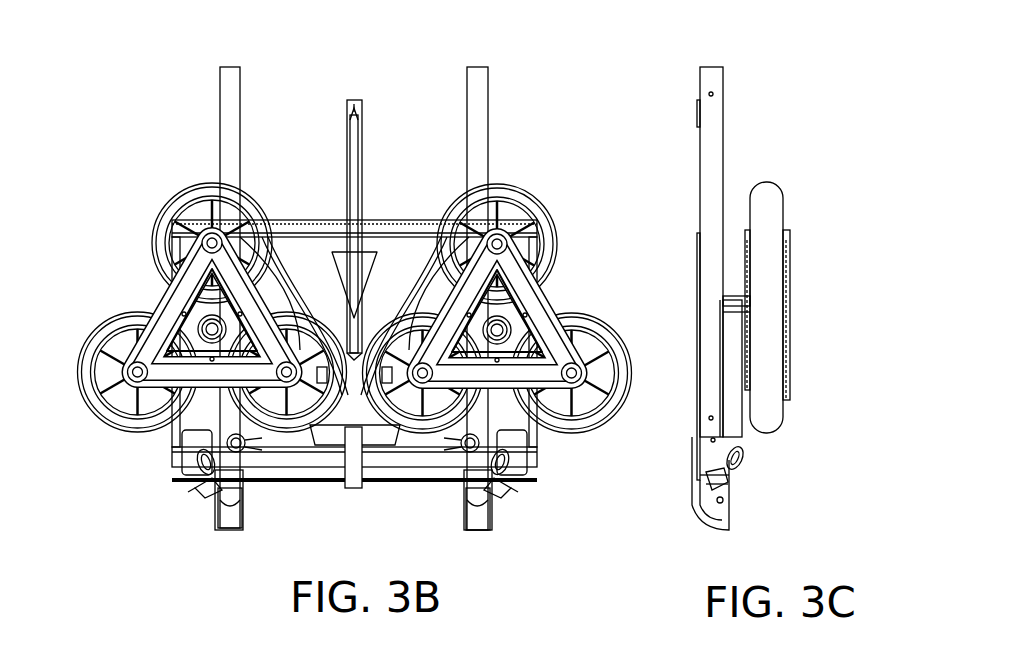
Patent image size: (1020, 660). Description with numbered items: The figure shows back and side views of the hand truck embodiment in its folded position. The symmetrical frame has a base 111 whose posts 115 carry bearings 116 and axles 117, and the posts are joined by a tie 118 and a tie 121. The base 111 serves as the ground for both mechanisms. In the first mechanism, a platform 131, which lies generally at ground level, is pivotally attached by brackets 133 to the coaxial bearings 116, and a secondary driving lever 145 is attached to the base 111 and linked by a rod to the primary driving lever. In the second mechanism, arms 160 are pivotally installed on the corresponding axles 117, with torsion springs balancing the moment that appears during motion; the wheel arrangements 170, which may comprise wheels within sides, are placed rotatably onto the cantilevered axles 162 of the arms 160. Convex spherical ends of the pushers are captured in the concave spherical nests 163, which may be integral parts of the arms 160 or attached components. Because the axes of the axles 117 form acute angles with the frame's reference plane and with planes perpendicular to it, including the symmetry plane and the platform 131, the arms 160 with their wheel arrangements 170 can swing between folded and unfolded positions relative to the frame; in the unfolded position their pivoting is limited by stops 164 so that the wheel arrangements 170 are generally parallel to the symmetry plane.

In FIG. 3B, the base 111 is at (390, 303).
In FIG. 3C, the base 111 is at (738, 306).
In FIG. 3B, the posts 115 is at (227, 122).
In FIG. 3C, the posts 115 is at (711, 82).
In FIG. 3B, the secondary driving lever 145 is at (355, 110).
In FIG. 3B, the tie 121 is at (382, 228).
In FIG. 3B, the tie 118 is at (398, 456).
In FIG. 3B, the wheel arrangements 170 is at (140, 292).
In FIG. 3C, the wheel arrangements 170 is at (794, 200).
In FIG. 3B, the concave spherical nests 163 is at (243, 450).
In FIG. 3B, the stops 164 is at (195, 488).
In FIG. 3C, the stops 164 is at (708, 482).
In FIG. 3B, the brackets 133 is at (230, 508).
In FIG. 3C, the brackets 133 is at (697, 520).
In FIG. 3C, the cantilevered axles 162 is at (735, 322).
In FIG. 3C, the arms 160 is at (733, 380).
In FIG. 3C, the platform 131 is at (698, 470).
In FIG. 3C, the axles 117 is at (752, 452).
In FIG. 3C, the bearings 116 is at (742, 496).